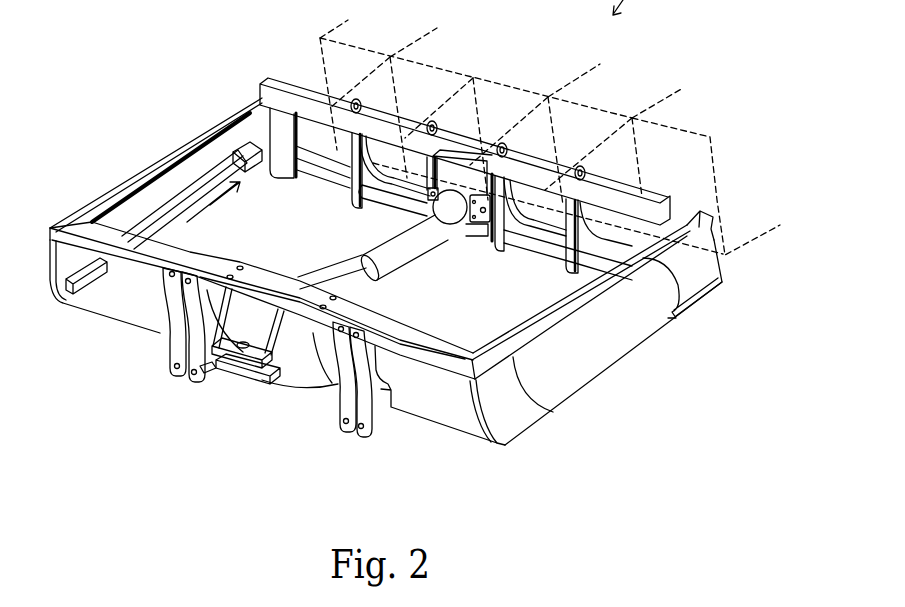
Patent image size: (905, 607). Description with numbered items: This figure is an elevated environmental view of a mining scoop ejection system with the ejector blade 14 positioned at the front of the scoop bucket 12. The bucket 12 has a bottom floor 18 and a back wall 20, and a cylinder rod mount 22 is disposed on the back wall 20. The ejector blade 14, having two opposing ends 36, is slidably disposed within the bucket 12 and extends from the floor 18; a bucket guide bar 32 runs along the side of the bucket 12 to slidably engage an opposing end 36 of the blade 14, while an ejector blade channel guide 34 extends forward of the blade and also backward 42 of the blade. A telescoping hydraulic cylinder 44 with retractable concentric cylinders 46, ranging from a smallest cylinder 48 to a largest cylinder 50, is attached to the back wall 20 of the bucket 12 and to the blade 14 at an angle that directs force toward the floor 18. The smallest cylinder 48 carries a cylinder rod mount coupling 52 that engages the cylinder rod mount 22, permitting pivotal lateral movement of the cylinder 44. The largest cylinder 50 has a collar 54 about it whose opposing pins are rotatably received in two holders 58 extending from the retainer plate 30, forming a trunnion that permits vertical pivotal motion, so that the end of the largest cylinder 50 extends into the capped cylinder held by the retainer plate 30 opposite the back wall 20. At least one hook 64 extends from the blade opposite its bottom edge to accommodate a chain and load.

The scoop bucket 12 is at (140, 107).
The ejector blade 14 is at (286, 86).
The bottom floor 18 is at (496, 314).
The back wall 20 is at (245, 250).
The cylinder rod mount 22 is at (260, 382).
The retainer plate 30 is at (474, 184).
The bucket guide bar 32 is at (207, 176).
The ejector blade channel guide 34 is at (246, 142).
The opposing ends 36 is at (271, 112).
The backward extension 42 is at (252, 166).
The telescoping hydraulic cylinder 44 is at (400, 233).
The retractable concentric cylinders 46 is at (340, 267).
The smallest cylinder 48 is at (210, 378).
The largest cylinder 50 is at (461, 219).
The cylinder rod mount coupling 52 is at (253, 350).
The collar 54 is at (482, 190).
The holders 58 is at (485, 228).
The hook 64 is at (327, 36).